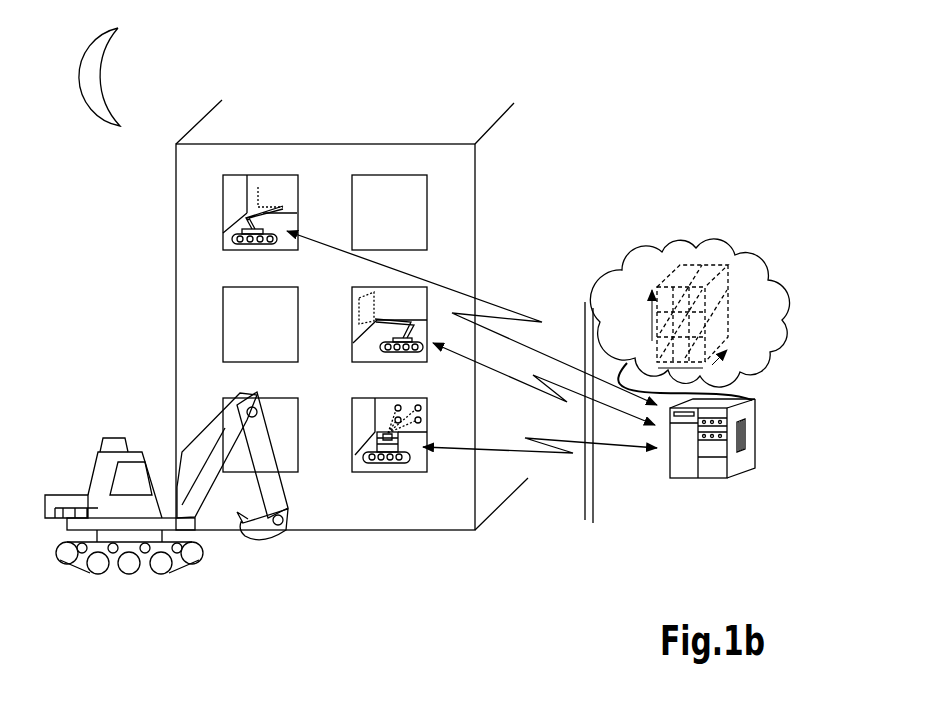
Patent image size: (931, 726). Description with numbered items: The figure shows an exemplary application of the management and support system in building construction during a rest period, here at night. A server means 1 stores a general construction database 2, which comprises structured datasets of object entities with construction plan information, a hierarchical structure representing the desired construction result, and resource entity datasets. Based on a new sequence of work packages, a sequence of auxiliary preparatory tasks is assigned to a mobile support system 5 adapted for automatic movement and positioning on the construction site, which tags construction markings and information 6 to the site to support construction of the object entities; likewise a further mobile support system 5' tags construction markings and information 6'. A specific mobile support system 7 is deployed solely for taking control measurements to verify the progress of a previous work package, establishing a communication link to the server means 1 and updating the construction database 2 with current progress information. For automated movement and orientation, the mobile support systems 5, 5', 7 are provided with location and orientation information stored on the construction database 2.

The server means 1 is at (710, 467).
The general construction database 2 is at (742, 267).
The mobile support system 5 is at (175, 216).
The construction markings and information 6 is at (175, 175).
The mobile support system 5' is at (466, 284).
The construction markings and information 6' is at (458, 237).
The mobile support system 7 is at (378, 443).